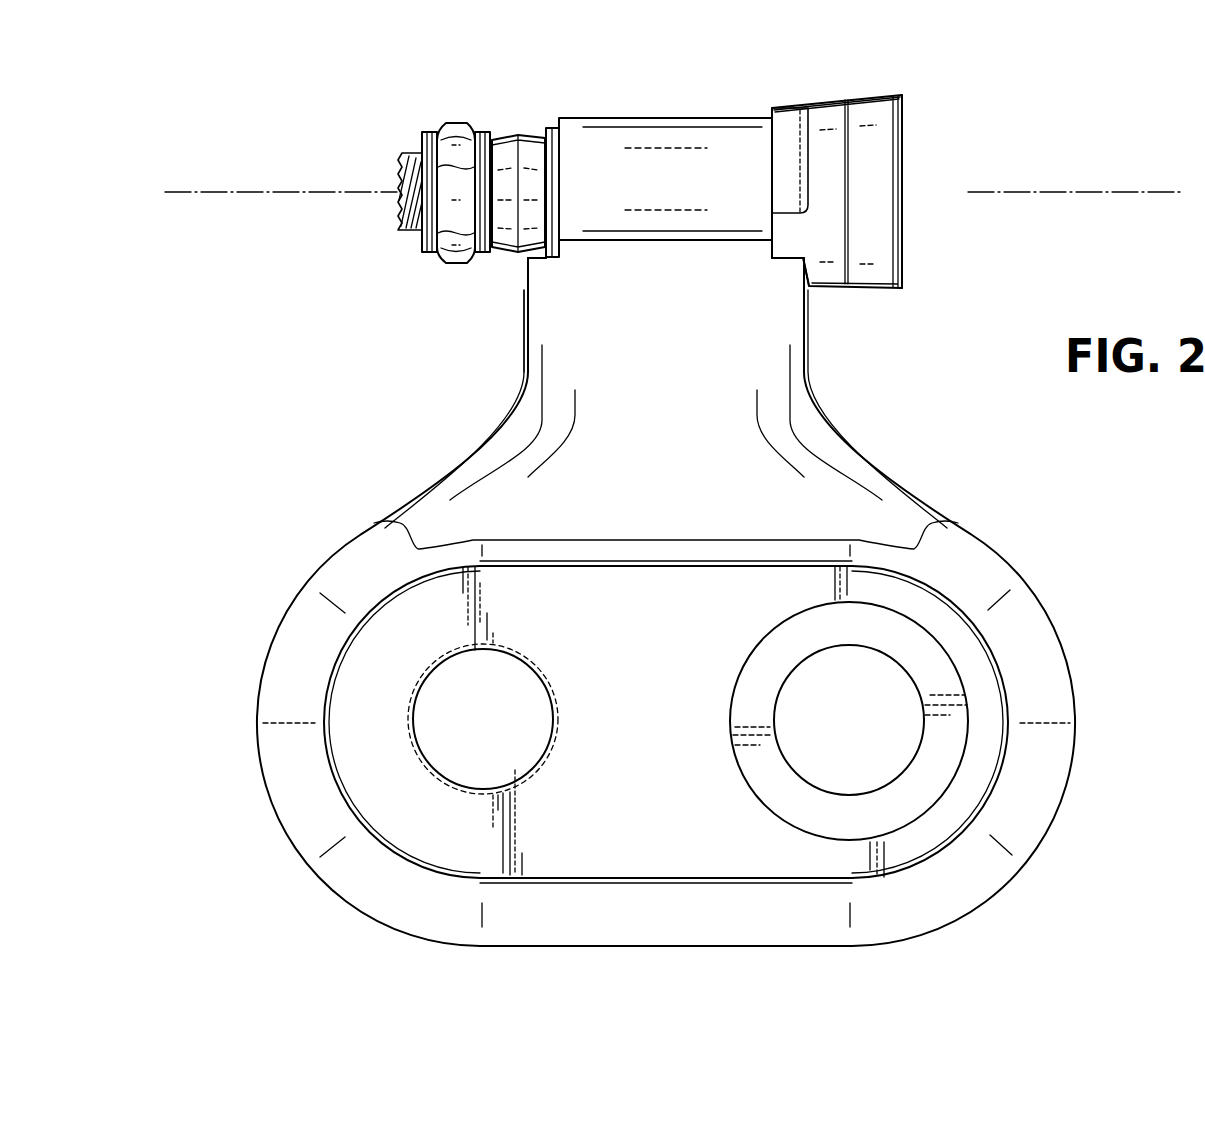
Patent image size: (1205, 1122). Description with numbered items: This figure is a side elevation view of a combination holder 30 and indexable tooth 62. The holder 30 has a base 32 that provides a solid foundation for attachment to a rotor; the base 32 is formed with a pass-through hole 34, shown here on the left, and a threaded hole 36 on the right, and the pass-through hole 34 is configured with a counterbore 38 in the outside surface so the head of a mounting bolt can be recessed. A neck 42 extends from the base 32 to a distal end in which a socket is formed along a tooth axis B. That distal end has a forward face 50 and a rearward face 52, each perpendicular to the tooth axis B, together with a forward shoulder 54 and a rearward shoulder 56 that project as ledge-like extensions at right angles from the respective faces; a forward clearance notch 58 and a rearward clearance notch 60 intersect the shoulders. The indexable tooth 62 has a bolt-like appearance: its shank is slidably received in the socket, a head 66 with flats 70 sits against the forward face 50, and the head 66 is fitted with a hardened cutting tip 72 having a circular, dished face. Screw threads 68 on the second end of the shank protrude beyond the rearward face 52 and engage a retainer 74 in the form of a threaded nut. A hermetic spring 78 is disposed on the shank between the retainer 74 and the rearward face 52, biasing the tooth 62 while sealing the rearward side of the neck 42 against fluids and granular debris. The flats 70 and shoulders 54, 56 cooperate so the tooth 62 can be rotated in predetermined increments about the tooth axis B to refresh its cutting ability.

The holder 30 is at (1073, 670).
The base 32 is at (643, 652).
The pass-through hole 34 is at (808, 782).
The threaded hole 36 is at (428, 762).
The counterbore 38 is at (740, 769).
The neck 42 is at (655, 334).
The forward face 50 is at (775, 237).
The rearward face 52 is at (555, 177).
The forward shoulder 54 is at (775, 257).
The rearward shoulder 56 is at (527, 255).
The forward clearance notch 58 is at (810, 289).
The rearward clearance notch 60 is at (524, 278).
The indexable tooth 62 is at (896, 91).
The head 66 is at (822, 98).
The screw threads 68 is at (403, 232).
The flat 70 is at (782, 158).
The cutting tip 72 is at (902, 148).
The retainer 74 is at (450, 122).
The hermetic spring 78 is at (507, 132).
The tooth axis B is at (1060, 192).